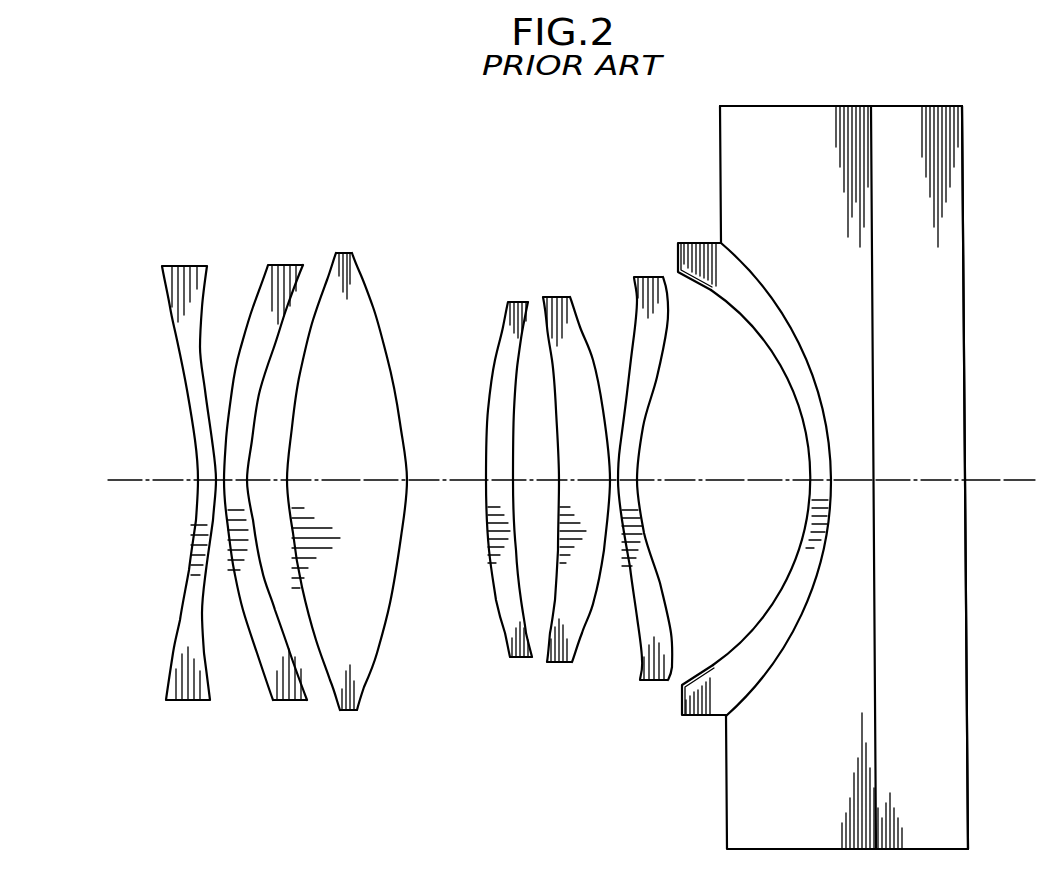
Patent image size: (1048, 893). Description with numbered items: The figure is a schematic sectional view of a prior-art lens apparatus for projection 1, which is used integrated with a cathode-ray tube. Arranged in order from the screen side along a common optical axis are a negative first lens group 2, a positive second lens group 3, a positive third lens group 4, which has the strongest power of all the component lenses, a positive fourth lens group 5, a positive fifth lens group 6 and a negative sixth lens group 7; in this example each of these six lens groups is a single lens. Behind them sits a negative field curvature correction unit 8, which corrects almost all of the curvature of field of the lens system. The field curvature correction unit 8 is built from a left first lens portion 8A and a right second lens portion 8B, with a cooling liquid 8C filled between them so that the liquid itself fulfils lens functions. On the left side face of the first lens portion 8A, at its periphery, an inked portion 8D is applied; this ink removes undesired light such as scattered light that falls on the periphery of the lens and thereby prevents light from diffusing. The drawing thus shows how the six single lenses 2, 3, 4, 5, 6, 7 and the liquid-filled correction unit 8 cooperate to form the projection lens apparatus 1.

The lens apparatus for projection 1 is at (236, 147).
The negative first lens group 2 is at (193, 700).
The positive second lens group 3 is at (288, 700).
The positive third lens group 4 is at (361, 705).
The positive fourth lens group 5 is at (521, 661).
The positive fifth lens group 6 is at (560, 664).
The negative sixth lens group 7 is at (652, 681).
The negative field curvature correction unit 8 is at (735, 822).
The first lens portion 8A is at (718, 243).
The second lens portion 8B is at (962, 153).
The cooling liquid 8C is at (800, 120).
The inked portion 8D is at (678, 259).